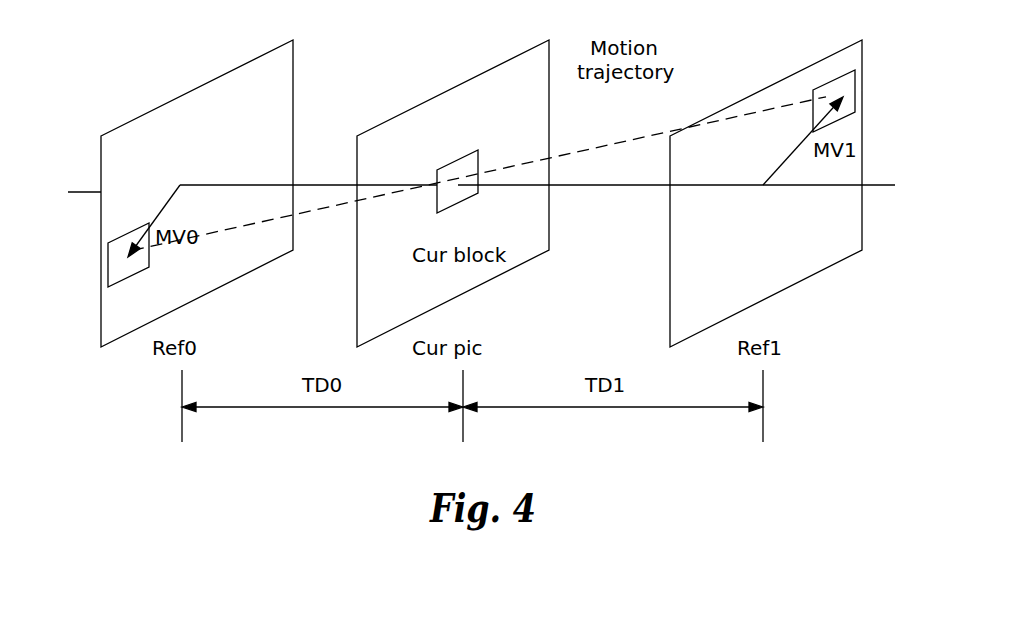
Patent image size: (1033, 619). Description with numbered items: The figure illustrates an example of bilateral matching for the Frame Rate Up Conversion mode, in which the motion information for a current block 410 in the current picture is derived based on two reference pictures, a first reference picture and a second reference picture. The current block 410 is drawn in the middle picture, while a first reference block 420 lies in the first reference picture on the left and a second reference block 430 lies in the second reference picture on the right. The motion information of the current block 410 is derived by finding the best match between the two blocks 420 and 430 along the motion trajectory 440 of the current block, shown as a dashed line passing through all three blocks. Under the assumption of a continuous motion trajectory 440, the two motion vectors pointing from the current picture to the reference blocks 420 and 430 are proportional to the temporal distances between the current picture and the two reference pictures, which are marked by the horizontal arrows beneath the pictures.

The current block 410 is at (455, 161).
The reference block in Ref0 420 is at (130, 232).
The reference block in Ref1 430 is at (832, 81).
The motion trajectory 440 is at (633, 138).